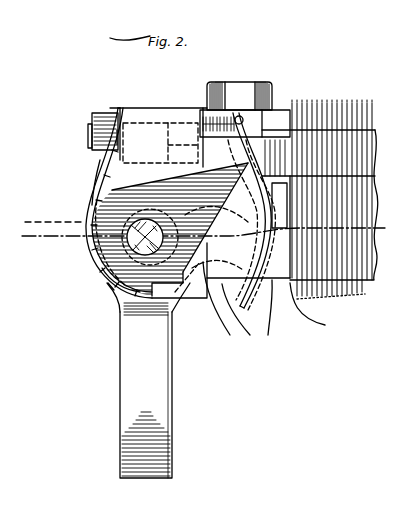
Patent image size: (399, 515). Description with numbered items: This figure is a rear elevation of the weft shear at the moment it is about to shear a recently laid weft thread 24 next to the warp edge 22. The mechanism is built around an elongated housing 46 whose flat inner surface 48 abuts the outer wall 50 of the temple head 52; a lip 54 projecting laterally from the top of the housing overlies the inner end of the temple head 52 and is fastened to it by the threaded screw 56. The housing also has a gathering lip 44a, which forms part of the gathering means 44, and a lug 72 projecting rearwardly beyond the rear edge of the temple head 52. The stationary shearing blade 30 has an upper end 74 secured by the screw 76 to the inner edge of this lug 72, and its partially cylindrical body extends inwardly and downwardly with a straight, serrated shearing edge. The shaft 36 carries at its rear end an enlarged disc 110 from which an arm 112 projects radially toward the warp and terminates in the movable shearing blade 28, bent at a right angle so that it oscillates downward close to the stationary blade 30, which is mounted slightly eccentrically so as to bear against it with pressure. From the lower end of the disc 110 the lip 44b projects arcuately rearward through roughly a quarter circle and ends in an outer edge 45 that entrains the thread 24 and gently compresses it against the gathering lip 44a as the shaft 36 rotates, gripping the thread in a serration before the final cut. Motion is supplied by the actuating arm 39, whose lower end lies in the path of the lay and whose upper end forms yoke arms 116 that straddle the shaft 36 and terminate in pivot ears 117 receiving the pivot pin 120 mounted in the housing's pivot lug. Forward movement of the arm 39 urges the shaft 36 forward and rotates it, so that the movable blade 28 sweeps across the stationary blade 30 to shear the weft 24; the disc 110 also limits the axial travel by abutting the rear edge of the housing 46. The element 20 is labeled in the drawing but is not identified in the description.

The housing 20 is at (76, 159).
The warp edge 22 is at (331, 217).
The laid weft thread 24 is at (62, 223).
The movable shearing blade 28 is at (243, 150).
The stationary shearing blade 30 is at (250, 167).
The shaft 36 is at (97, 275).
The actuating arm 39 is at (138, 377).
The gathering means 44 is at (95, 258).
The gathering lip 44a is at (117, 137).
The lip 44b is at (110, 286).
The outer edge 45 is at (107, 290).
The housing 46 is at (100, 163).
The flat inner surface 48 is at (222, 320).
The outer wall 50 is at (226, 310).
The temple head 52 is at (370, 135).
The lip 54 is at (284, 123).
The threaded screw 56 is at (242, 96).
The lug 72 is at (203, 106).
The upper end 74 is at (263, 126).
The screw 76 is at (243, 139).
The enlarged disc 110 is at (158, 265).
The arm 112 is at (190, 170).
The yoke arms 116 is at (100, 180).
The pivot ears 117 is at (113, 112).
The pivot pin 120 is at (86, 128).